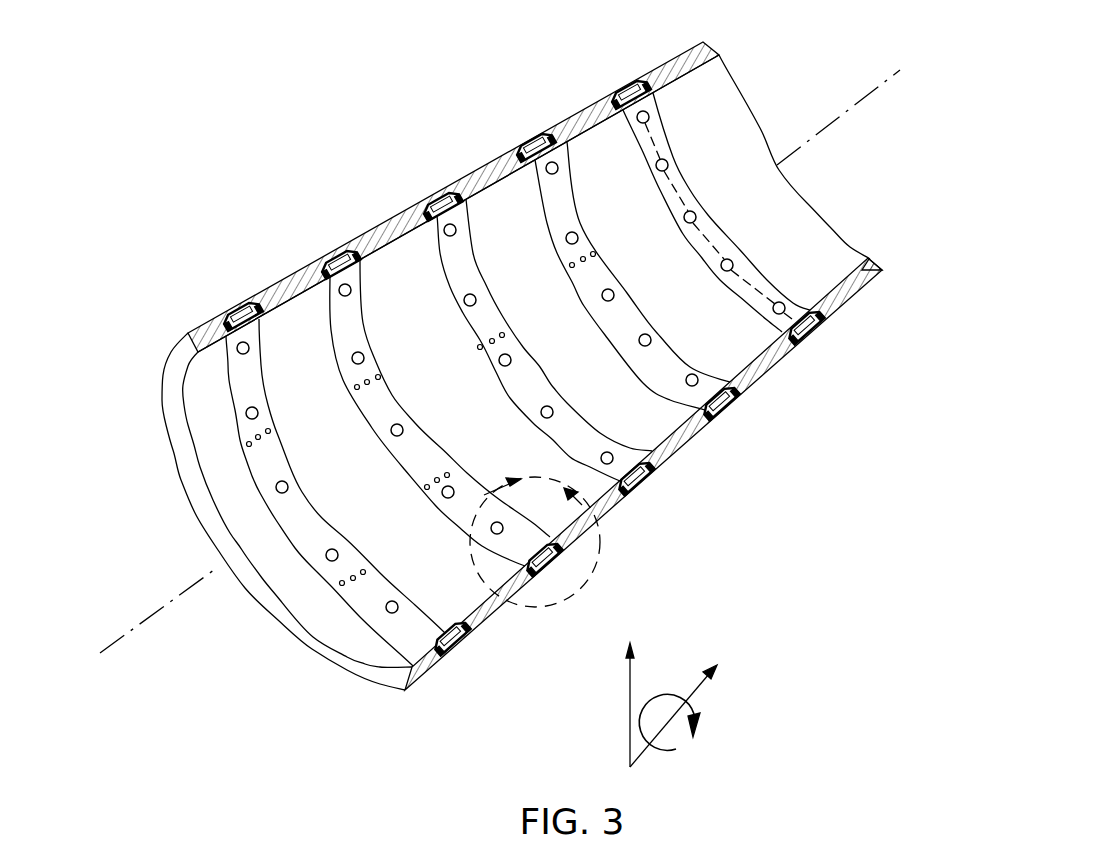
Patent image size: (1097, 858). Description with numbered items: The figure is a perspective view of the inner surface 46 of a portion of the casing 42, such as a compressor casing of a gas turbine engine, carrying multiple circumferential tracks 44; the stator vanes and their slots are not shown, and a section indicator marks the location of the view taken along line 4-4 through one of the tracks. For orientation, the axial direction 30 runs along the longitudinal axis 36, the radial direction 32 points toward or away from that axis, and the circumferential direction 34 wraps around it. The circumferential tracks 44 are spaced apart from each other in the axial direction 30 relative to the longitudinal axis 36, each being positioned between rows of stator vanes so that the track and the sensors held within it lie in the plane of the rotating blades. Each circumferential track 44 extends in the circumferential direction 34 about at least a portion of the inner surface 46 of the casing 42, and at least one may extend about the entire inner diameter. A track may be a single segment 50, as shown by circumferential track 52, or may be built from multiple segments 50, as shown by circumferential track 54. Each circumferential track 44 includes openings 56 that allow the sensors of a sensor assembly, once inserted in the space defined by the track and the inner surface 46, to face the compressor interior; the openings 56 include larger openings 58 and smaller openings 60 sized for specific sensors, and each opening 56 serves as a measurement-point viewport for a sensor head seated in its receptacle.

The section line 4- 4 is at (535, 536).
The axial direction 30 is at (695, 691).
The radial direction 32 is at (630, 689).
The circumferential direction 34 is at (655, 701).
The longitudinal axis 36 is at (838, 114).
The casing 42 is at (679, 56).
The circumferential tracks 44 is at (543, 131).
The inner surface 46 is at (820, 241).
The segment 50 is at (680, 167).
The circumferential track 52 is at (713, 210).
The circumferential track 54 is at (710, 387).
The openings 56 is at (502, 321).
The larger openings 58 is at (648, 331).
The smaller openings 60 is at (505, 334).